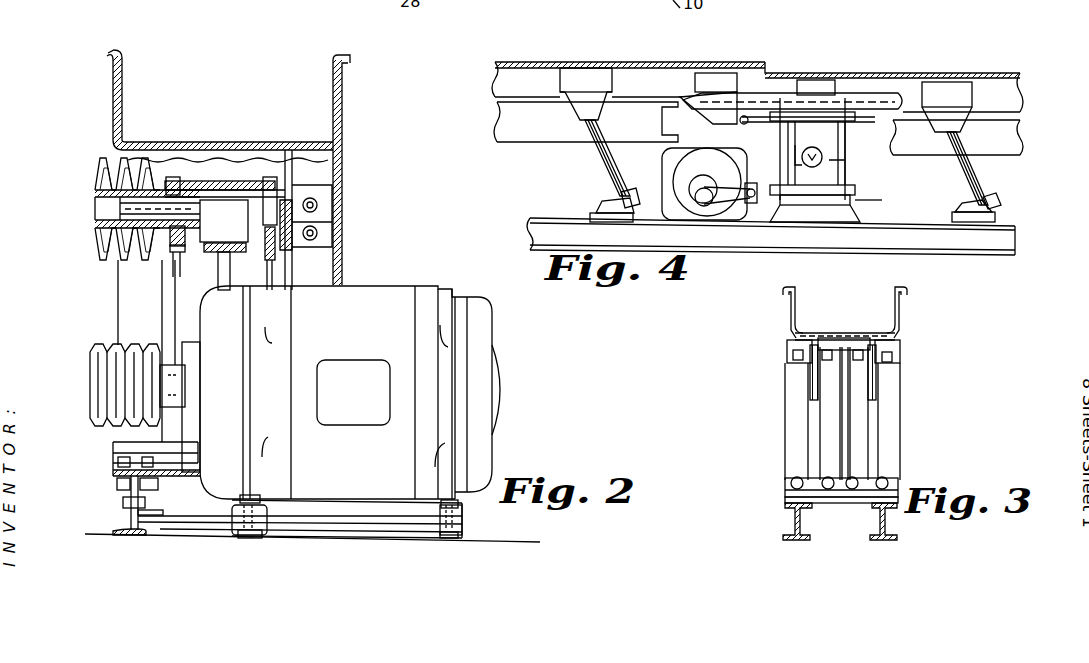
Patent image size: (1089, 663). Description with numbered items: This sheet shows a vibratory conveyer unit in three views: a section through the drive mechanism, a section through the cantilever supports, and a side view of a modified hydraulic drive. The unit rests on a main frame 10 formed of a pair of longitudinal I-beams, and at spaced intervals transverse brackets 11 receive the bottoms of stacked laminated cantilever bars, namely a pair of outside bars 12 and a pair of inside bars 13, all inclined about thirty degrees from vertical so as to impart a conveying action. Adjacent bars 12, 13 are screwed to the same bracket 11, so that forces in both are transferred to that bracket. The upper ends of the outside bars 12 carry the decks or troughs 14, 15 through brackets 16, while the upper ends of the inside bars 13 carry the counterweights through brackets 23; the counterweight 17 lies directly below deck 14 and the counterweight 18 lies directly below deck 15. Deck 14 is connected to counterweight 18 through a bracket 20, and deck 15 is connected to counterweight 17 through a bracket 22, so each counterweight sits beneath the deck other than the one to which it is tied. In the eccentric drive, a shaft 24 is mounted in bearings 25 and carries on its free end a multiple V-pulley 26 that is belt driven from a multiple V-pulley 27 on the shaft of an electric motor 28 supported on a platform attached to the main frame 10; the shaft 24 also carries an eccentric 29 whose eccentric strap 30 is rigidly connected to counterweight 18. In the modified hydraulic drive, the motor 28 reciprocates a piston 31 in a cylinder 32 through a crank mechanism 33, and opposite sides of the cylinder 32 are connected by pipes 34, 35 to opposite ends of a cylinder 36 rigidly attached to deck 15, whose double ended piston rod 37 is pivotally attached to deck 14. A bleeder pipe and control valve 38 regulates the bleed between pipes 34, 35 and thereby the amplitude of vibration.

In FIG. 2, the main frame 10 is at (118, 500).
In FIG. 4, the main frame 10 is at (950, 238).
In FIG. 3, the main frame 10 is at (874, 518).
In FIG. 2, the transverse brackets 11 is at (120, 450).
In FIG. 4, the transverse brackets 11 is at (605, 205).
In FIG. 3, the transverse brackets 11 is at (787, 496).
In FIG. 2, the outside cantilever bars 12 is at (128, 282).
In FIG. 4, the outside cantilever bars 12 is at (600, 152).
In FIG. 3, the outside cantilever bars 12 is at (795, 418).
In FIG. 2, the inside cantilever bars 13 is at (222, 258).
In FIG. 3, the inside cantilever bars 13 is at (848, 423).
In FIG. 2, the deck 14 is at (190, 142).
In FIG. 4, the deck 14 is at (540, 68).
In FIG. 3, the deck 14 is at (834, 333).
In FIG. 4, the deck 15 is at (880, 82).
In FIG. 2, the brackets 16 is at (318, 172).
In FIG. 3, the brackets 16 is at (795, 345).
In FIG. 4, the counterweight 17 is at (512, 118).
In FIG. 3, the counterweight 17 is at (810, 385).
In FIG. 4, the counterweight 18 is at (1007, 137).
In FIG. 4, the bracket 20 is at (722, 82).
In FIG. 4, the bracket 22 is at (820, 86).
In FIG. 3, the brackets 23 is at (852, 338).
In FIG. 2, the shaft 24 is at (120, 205).
In FIG. 2, the bearings 25 is at (168, 245).
In FIG. 2, the multiple V-pulley 26 is at (97, 243).
In FIG. 2, the multiple V-pulley 27 is at (95, 370).
In FIG. 2, the electric motor 28 is at (341, 412).
In FIG. 4, the electric motor 28 is at (740, 158).
In FIG. 2, the eccentric 29 is at (224, 245).
In FIG. 2, the eccentric strap 30 is at (238, 183).
In FIG. 4, the piston 31 is at (812, 205).
In FIG. 4, the cylinder 32 is at (835, 200).
In FIG. 4, the crank mechanism 33 is at (712, 200).
In FIG. 4, the pipe 34 is at (780, 143).
In FIG. 4, the pipe 35 is at (840, 146).
In FIG. 4, the cylinder 36 is at (840, 115).
In FIG. 4, the double ended piston rod 37 is at (740, 122).
In FIG. 4, the bleeder pipe and control valve 38 is at (832, 160).